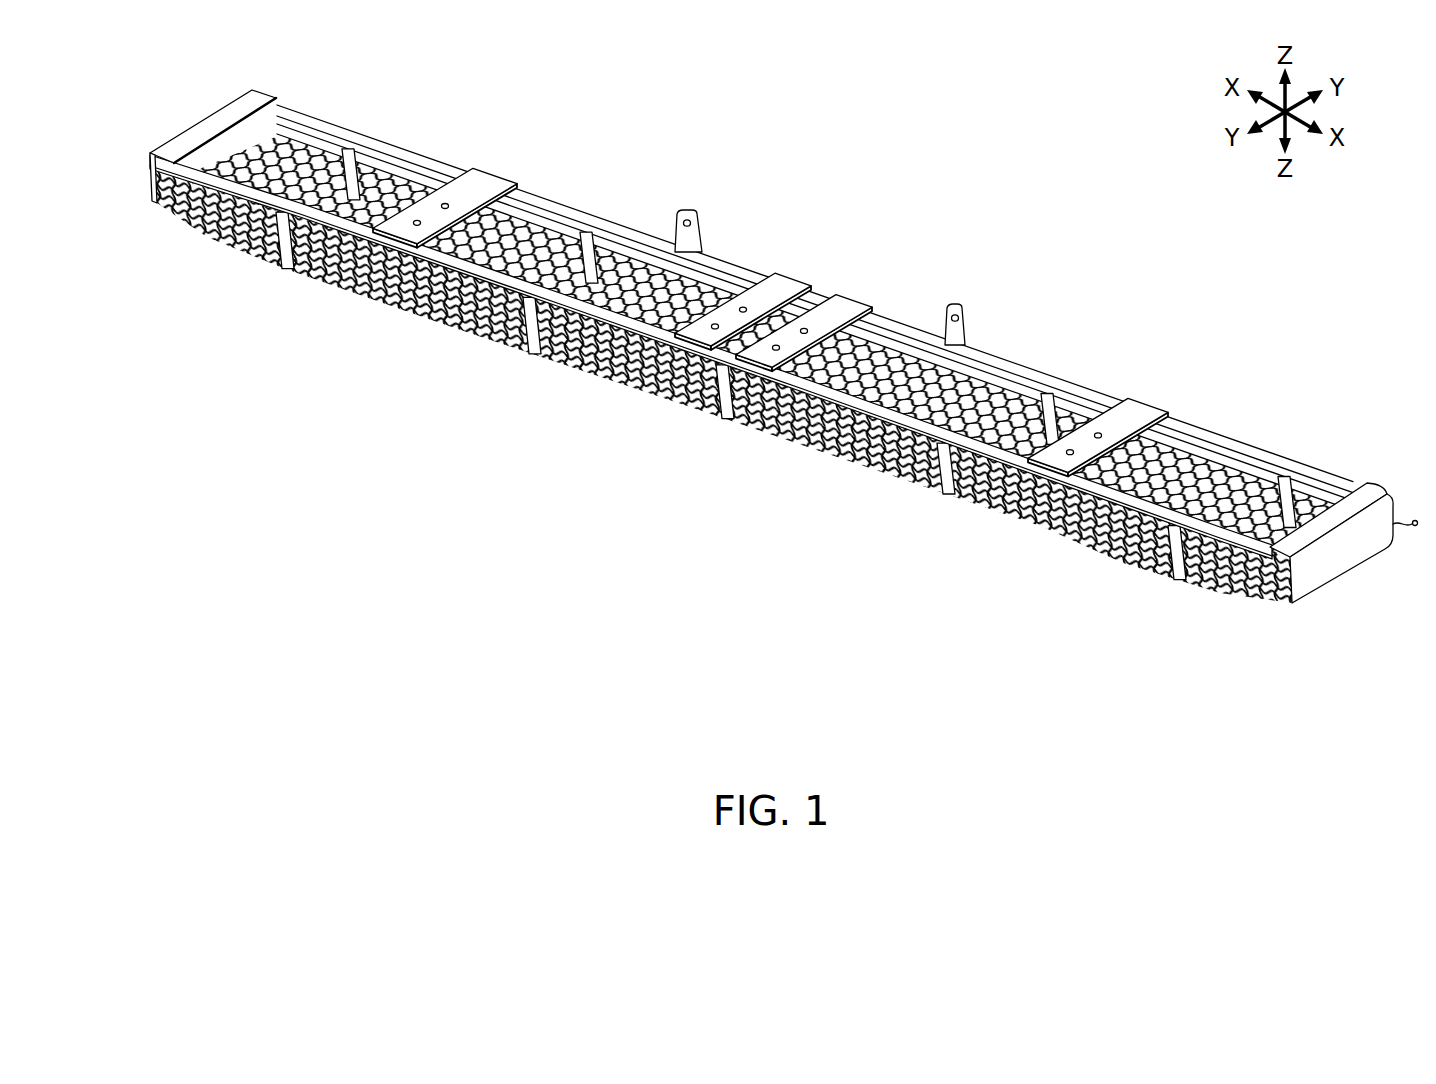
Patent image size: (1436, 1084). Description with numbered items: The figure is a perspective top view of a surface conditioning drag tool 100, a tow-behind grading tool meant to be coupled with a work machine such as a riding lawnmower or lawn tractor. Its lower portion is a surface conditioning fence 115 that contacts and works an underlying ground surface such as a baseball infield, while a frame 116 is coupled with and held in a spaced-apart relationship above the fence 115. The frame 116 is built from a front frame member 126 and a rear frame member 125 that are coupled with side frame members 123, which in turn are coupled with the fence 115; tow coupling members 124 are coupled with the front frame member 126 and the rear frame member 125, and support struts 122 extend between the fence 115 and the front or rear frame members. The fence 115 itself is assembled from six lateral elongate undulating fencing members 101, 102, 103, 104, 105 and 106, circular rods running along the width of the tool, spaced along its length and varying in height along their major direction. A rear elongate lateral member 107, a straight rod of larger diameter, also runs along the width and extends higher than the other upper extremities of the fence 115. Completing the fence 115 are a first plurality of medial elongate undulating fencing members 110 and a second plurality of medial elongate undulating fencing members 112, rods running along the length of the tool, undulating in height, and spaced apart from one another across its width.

The surface conditioning drag tool 100 is at (784, 333).
The lateral elongate undulating fencing member 101 is at (326, 288).
The lateral elongate undulating fencing member 102 is at (372, 305).
The lateral elongate undulating fencing member 103 is at (447, 326).
The lateral elongate undulating fencing member 104 is at (238, 148).
The lateral elongate undulating fencing member 105 is at (703, 256).
The lateral elongate undulating fencing member 106 is at (640, 282).
The rear elongate lateral member 107 is at (515, 216).
The first plurality of medial elongate undulating fencing members 110 is at (800, 446).
The second plurality of medial elongate undulating fencing members 112 is at (818, 476).
The surface conditioning fence 115 is at (1080, 565).
The frame 116 is at (1206, 418).
The support struts 122 is at (352, 160).
The side frame members 123 is at (262, 97).
The tow coupling members 124 is at (482, 178).
The rear frame member 125 is at (622, 368).
The front frame member 126 is at (950, 322).